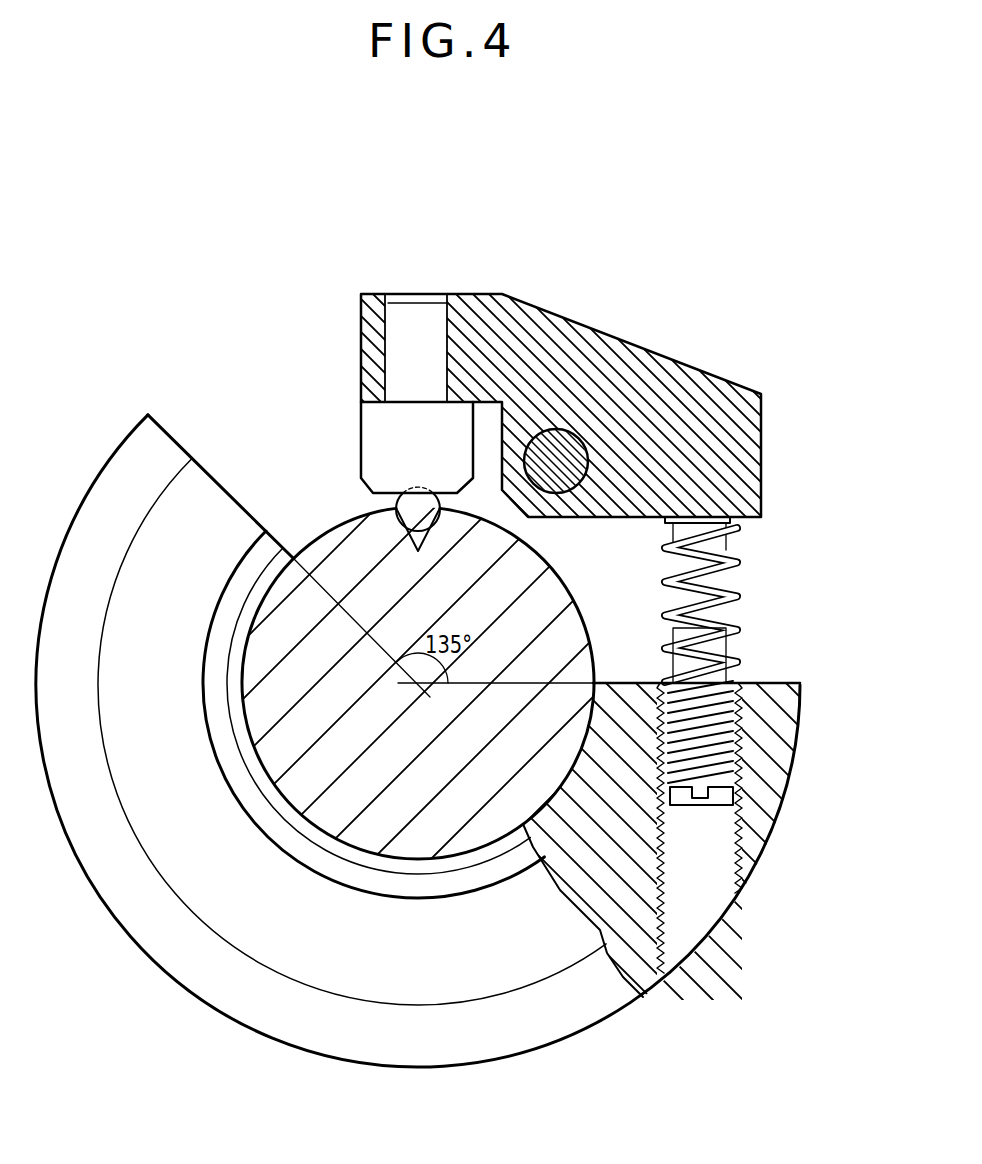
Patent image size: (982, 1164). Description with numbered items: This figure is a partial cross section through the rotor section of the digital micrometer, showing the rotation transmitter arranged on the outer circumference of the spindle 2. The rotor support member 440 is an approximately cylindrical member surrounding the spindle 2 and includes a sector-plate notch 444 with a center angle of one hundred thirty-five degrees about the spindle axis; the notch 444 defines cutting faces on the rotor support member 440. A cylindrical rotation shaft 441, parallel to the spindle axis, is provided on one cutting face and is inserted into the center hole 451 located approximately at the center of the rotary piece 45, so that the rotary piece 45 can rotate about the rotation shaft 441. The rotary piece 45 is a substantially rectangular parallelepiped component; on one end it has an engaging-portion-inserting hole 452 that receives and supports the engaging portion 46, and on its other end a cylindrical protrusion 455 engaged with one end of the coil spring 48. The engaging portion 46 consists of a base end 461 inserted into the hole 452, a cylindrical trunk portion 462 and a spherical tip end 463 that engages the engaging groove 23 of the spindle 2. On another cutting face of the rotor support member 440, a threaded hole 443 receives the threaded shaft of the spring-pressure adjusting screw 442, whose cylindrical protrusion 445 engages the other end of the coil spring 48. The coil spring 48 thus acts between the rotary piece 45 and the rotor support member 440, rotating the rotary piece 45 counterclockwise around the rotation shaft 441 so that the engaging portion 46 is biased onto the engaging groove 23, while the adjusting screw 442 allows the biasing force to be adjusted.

The spindle 2 is at (263, 657).
The engaging groove 23 is at (403, 538).
The rotary piece 45 is at (713, 383).
The engaging portion 46 is at (227, 288).
The coil spring 48 is at (723, 590).
The rotor support member 440 is at (102, 480).
The rotation shaft 441 is at (573, 447).
The spring-pressure adjusting screw 442 is at (730, 722).
The threaded hole 443 is at (702, 913).
The sector-plate notch 444 is at (222, 443).
The cylindrical protrusion 445 is at (715, 657).
The center hole 451 is at (557, 430).
The engaging-portion-inserting hole 452 is at (393, 295).
The cylindrical protrusion 455 is at (730, 525).
The base end 461 is at (392, 342).
The cylindrical trunk portion 462 is at (372, 428).
The spherical tip end 463 is at (392, 503).